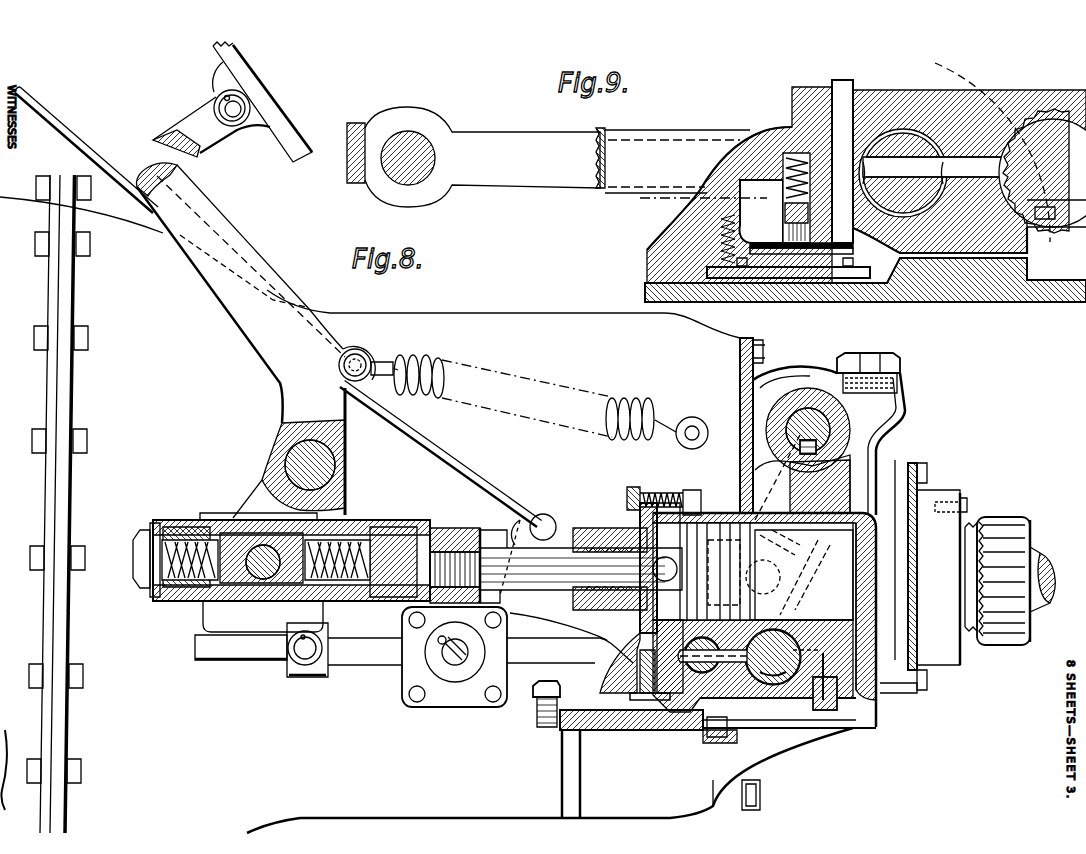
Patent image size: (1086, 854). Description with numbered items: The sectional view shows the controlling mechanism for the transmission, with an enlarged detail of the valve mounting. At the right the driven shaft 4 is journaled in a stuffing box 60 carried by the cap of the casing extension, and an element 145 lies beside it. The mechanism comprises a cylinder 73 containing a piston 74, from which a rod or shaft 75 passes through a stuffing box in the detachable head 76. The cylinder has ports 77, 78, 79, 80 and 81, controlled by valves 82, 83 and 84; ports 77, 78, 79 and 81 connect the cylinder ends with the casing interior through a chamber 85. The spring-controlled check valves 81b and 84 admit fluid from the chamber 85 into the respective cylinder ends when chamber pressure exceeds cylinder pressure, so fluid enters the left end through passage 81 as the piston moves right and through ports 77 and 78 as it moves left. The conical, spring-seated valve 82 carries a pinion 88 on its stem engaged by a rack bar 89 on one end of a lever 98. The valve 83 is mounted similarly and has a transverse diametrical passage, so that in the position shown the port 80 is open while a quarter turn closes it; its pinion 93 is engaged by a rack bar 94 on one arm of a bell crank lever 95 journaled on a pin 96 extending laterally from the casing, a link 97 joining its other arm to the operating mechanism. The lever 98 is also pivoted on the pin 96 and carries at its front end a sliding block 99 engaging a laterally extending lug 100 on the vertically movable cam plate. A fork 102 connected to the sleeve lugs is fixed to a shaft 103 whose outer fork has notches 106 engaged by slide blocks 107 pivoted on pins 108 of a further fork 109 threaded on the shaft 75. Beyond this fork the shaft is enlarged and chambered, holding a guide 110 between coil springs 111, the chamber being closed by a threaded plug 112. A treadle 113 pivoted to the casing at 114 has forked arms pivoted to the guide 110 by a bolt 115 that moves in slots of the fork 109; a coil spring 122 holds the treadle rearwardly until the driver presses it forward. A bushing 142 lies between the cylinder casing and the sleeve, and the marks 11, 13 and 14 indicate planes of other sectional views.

In FIG. 8, the driven shaft 4 is at (1043, 556).
In FIG. 8, the section line 11 is at (402, 629).
In FIG. 8, the section line 13 is at (810, 430).
In FIG. 8, the section line 14 is at (307, 473).
In FIG. 8, the stuffing box 60 is at (1023, 648).
In FIG. 8, the cylinder 73 is at (840, 560).
In FIG. 8, the piston 74 is at (771, 577).
In FIG. 8, the rod or shaft 75 is at (558, 560).
In FIG. 8, the head 76 is at (648, 490).
In FIG. 8, the port 77 is at (868, 678).
In FIG. 8, the port 78 is at (880, 700).
In FIG. 8, the port 79 is at (763, 715).
In FIG. 9, the port or passage 80 is at (840, 113).
In FIG. 8, the port or passage 80 is at (713, 718).
In FIG. 9, the port or passage 81 is at (800, 248).
In FIG. 8, the port or passage 81 is at (633, 730).
In FIG. 8, the spring-controlled check valve 81b is at (562, 728).
In FIG. 9, the valve 82 is at (1033, 130).
In FIG. 8, the valve 82 is at (795, 708).
In FIG. 9, the valve 83 is at (923, 212).
In FIG. 8, the valve 83 is at (670, 678).
In FIG. 8, the spring-controlled check valve 84 is at (845, 740).
In FIG. 8, the chamber 85 is at (720, 737).
In FIG. 9, the pinion 88 is at (1043, 227).
In FIG. 9, the rack bar 89 is at (1020, 250).
In FIG. 9, the pinion 93 is at (903, 275).
In FIG. 9, the rack bar 94 is at (837, 282).
In FIG. 9, the bell crank lever 95 is at (636, 188).
In FIG. 8, the bell crank lever 95 is at (540, 517).
In FIG. 9, the pin 96 is at (432, 162).
In FIG. 8, the pin 96 is at (455, 668).
In FIG. 8, the link 97 is at (457, 470).
In FIG. 9, the lever 98 is at (500, 145).
In FIG. 8, the lever 98 is at (363, 658).
In FIG. 8, the sliding block 99 is at (325, 680).
In FIG. 8, the lug 100 is at (213, 652).
In FIG. 8, the fork 102 is at (812, 490).
In FIG. 8, the shaft 103 is at (848, 417).
In FIG. 8, the notches or recesses 106 is at (774, 530).
In FIG. 8, the slide blocks 107 is at (773, 578).
In FIG. 8, the pins 108 is at (791, 542).
In FIG. 8, the fork 109 is at (500, 530).
In FIG. 8, the guide 110 is at (277, 602).
In FIG. 8, the coil springs 111 is at (173, 520).
In FIG. 8, the threaded plug 112 is at (140, 574).
In FIG. 8, the pedal or treadle 113 is at (254, 258).
In FIG. 8, the pivot 114 is at (272, 451).
In FIG. 8, the bolt 115 is at (273, 537).
In FIG. 8, the coil spring 122 is at (630, 405).
In FIG. 8, the bushing 142 is at (897, 366).
In FIG. 8, the key 145 is at (1008, 507).